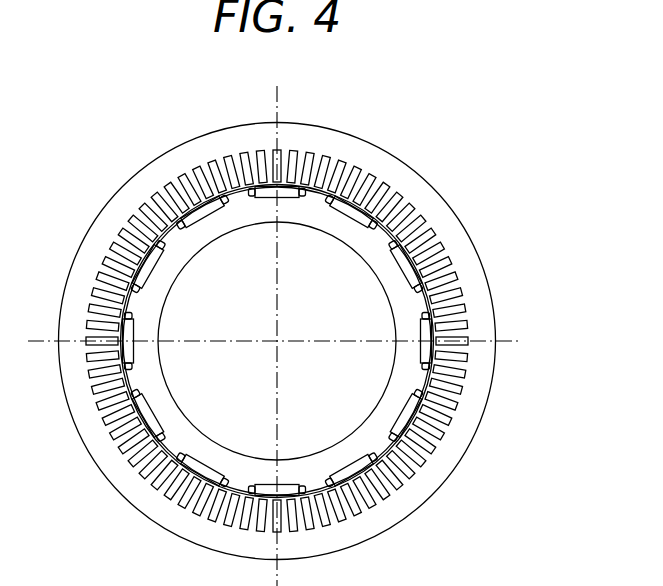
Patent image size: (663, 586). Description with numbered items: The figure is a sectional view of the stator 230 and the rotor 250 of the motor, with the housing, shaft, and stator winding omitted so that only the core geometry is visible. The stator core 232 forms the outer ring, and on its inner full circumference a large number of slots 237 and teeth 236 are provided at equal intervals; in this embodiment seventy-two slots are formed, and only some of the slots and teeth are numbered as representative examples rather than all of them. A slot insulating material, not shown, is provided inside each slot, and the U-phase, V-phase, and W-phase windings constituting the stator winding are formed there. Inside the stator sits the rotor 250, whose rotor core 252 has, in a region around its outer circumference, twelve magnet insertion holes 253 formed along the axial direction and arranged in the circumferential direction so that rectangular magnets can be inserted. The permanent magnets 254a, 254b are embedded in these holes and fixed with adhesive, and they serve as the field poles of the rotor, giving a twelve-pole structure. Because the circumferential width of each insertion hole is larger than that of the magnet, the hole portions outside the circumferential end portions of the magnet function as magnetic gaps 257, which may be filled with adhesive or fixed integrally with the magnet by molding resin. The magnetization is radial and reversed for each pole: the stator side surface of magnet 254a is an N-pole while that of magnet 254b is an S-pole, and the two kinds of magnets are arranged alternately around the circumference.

The stator 230 is at (309, 321).
The stator core 232 is at (150, 173).
The teeth 236 is at (317, 162).
The slots 237 is at (337, 165).
The permanent magnet 254a is at (440, 240).
The permanent magnet 254b is at (380, 180).
The rotor 250 is at (277, 341).
The rotor core 252 is at (231, 220).
The magnet insertion holes 253 is at (403, 268).
The magnetic gaps 257 is at (387, 243).